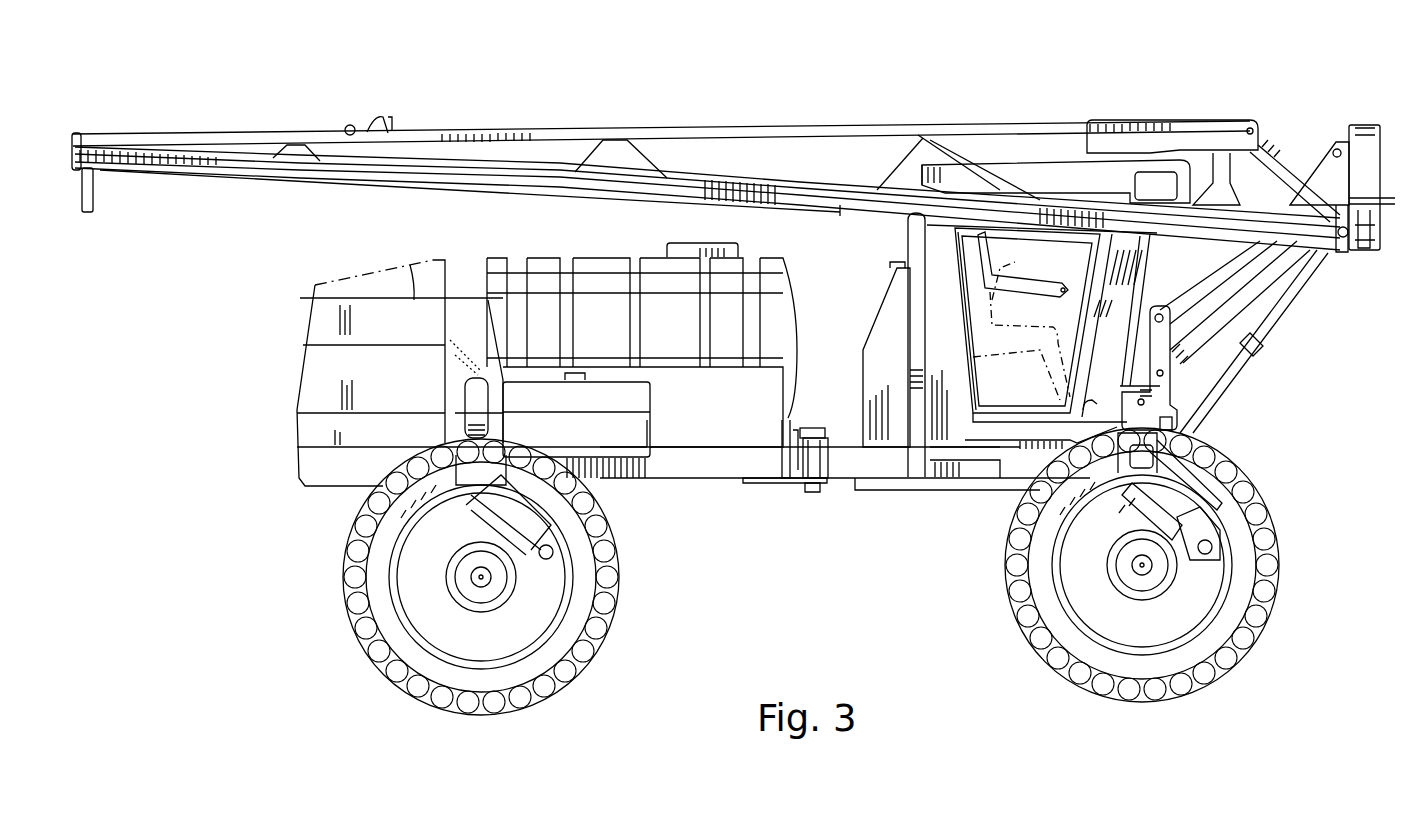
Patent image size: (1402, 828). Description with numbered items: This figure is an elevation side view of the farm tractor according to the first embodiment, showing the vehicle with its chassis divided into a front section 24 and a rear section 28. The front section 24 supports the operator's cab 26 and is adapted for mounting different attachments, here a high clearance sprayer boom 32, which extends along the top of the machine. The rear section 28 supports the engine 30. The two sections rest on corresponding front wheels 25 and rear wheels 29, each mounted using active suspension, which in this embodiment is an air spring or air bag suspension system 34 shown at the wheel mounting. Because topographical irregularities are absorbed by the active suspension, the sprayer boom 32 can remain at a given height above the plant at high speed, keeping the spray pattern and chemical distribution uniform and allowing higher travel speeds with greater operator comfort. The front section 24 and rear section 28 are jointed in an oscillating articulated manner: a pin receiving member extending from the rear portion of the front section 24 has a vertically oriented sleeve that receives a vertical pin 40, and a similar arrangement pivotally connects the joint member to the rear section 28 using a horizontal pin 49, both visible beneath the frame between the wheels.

The front section 24 is at (875, 480).
The front wheels 25 is at (1275, 605).
The operator's cab 26 is at (1027, 160).
The rear section 28 is at (660, 480).
The rear wheels 29 is at (343, 590).
The engine 30 is at (410, 265).
The high clearance sprayer boom 32 is at (550, 177).
The air spring or air bag suspension system 34 is at (1222, 503).
The vertical pin 40 is at (806, 488).
The horizontal pin 49 is at (790, 462).